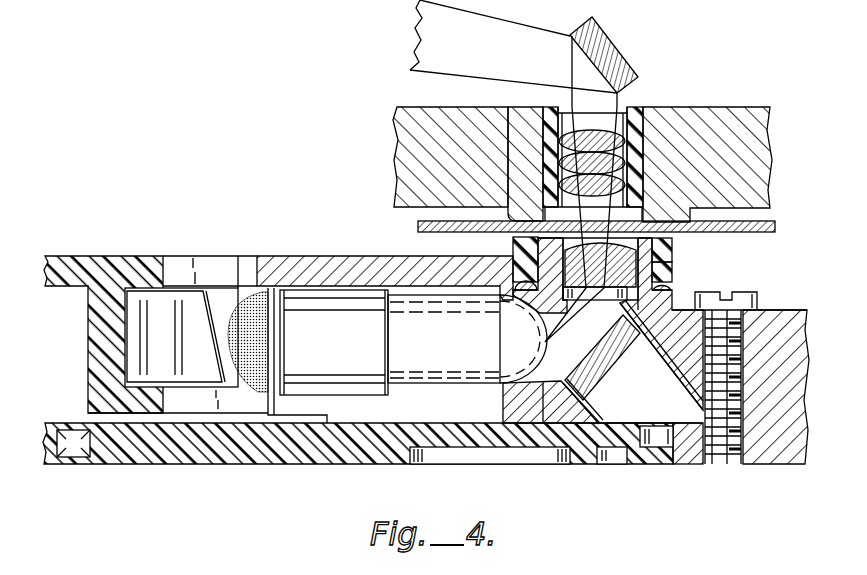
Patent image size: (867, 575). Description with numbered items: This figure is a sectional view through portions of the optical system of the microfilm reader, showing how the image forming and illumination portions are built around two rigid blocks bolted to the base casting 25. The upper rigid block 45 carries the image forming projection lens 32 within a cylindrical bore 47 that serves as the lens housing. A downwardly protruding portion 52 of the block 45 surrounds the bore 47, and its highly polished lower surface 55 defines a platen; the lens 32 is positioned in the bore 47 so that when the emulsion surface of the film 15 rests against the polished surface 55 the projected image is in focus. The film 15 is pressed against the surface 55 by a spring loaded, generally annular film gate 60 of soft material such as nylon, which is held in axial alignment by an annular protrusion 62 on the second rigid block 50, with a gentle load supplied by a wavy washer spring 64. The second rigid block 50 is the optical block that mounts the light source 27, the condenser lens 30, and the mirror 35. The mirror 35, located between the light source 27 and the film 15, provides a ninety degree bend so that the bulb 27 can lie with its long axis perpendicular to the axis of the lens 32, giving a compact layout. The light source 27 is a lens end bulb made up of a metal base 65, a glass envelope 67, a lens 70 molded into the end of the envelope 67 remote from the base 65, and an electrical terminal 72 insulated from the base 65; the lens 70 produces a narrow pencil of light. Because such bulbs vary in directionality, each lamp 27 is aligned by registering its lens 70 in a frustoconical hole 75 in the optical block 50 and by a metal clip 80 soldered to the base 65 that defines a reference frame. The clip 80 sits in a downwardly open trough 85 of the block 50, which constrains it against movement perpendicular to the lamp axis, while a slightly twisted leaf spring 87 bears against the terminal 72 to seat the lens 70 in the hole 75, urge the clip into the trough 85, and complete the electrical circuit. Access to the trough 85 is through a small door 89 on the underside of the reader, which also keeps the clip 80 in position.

The film 15 is at (772, 226).
The base casting 25 is at (702, 462).
The light source 27 is at (413, 357).
The condenser lens 30 is at (557, 263).
The image forming projection lens 32 is at (645, 155).
The mirror 35 is at (598, 378).
The rigid block 45 is at (417, 153).
The cylindrical bore 47 is at (604, 125).
The second rigid block 50 is at (541, 424).
The downwardly protruding portion 52 is at (668, 212).
The polished lower surface 55 is at (513, 219).
The film gate 60 is at (673, 250).
The annular protrusion 62 is at (665, 262).
The wavy washer spring 64 is at (673, 283).
The metal base 65 is at (350, 345).
The glass envelope 67 is at (455, 345).
The lens 70 is at (508, 358).
The electrical terminal 72 is at (229, 338).
The frustoconical hole 75 is at (503, 292).
The metal clip 80 is at (263, 420).
The trough 85 is at (330, 276).
The leaf spring 87 is at (217, 338).
The door 89 is at (320, 458).